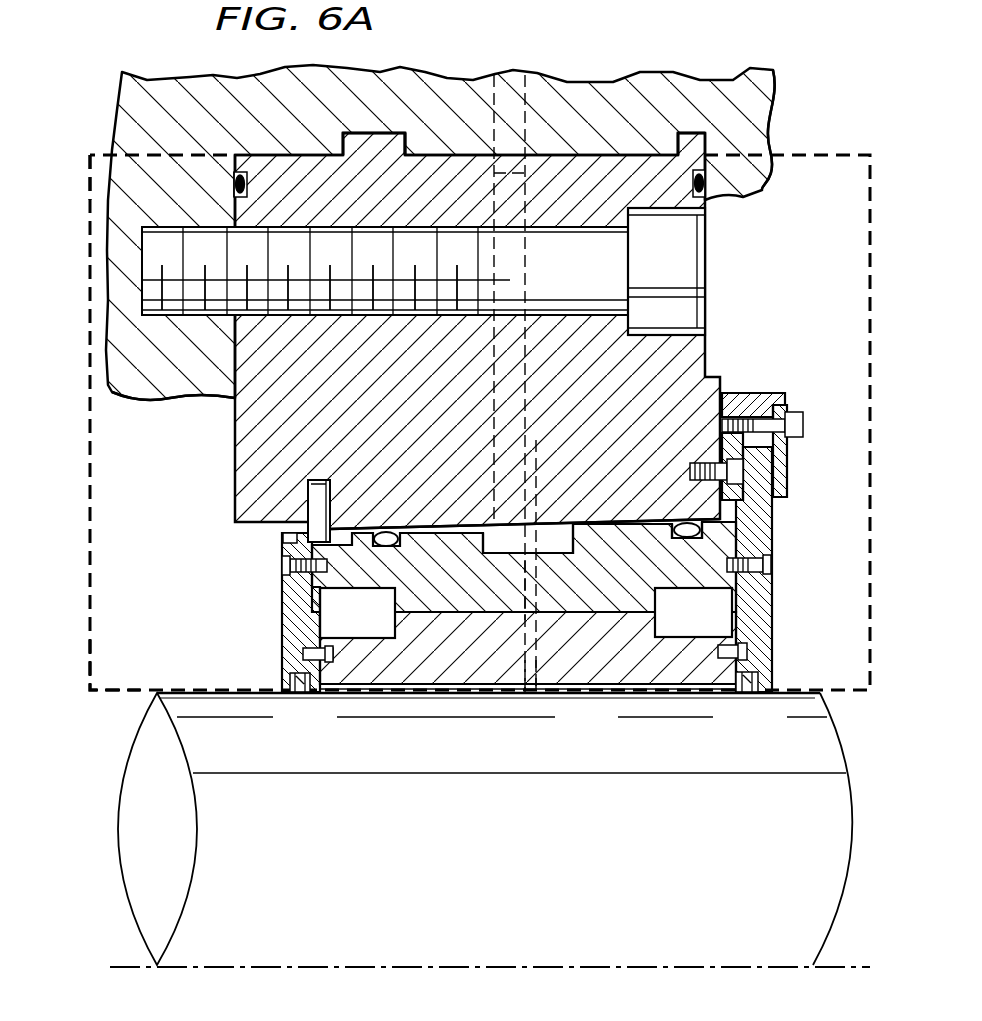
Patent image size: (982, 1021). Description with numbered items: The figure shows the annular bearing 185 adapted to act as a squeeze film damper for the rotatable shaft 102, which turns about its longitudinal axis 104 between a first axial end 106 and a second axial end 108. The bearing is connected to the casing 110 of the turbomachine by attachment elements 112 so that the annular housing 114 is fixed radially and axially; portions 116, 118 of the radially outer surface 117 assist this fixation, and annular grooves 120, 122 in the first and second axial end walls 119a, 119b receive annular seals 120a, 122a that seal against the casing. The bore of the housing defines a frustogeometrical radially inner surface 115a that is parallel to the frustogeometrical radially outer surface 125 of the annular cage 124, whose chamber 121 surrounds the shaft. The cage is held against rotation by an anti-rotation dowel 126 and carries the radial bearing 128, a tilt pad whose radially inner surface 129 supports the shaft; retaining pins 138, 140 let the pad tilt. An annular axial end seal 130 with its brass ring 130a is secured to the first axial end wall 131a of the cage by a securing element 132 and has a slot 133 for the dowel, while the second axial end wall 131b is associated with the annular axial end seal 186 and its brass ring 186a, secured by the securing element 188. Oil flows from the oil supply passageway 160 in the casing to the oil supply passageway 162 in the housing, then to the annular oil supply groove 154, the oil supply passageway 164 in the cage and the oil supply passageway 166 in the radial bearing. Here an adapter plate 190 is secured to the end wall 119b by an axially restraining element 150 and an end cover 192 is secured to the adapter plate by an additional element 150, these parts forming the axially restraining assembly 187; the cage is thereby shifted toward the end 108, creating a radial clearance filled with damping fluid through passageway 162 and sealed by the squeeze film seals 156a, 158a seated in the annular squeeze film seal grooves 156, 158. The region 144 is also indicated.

The rotatable shaft 102 is at (553, 850).
The longitudinal axis 104 is at (225, 970).
The first axial end 106 is at (90, 152).
The second axial end 108 is at (870, 152).
The casing 110 is at (184, 127).
The attachment elements 112 is at (686, 303).
The annular housing 114 is at (390, 402).
The frustogeometrical radially inner surface 115a is at (492, 525).
The portion of radially outer surface 116 is at (382, 150).
The radially outer surface 117 is at (318, 190).
The portion of radially outer surface 118 is at (685, 143).
The first axial end wall 119a is at (230, 398).
The second axial end wall 119b is at (766, 126).
The annular groove 120 is at (250, 186).
The annular seal 120a is at (233, 186).
The chamber 121 is at (635, 692).
The annular groove 122 is at (693, 185).
The annular seal 122a is at (708, 194).
The annular cage 124 is at (510, 603).
The frustogeometrical radially outer surface 125 is at (430, 548).
The anti-rotation dowel 126 is at (312, 503).
The radial bearing 128 is at (494, 662).
The radially inner surface 129 is at (585, 694).
The annular axial end seal 130 is at (283, 619).
The annular brass ring 130a is at (298, 693).
The first axial end wall 131a is at (300, 580).
The second axial end wall 131b is at (693, 612).
The securing element 132 is at (282, 566).
The slot 133 is at (282, 537).
The retaining pin 138 is at (303, 654).
The retaining pin 140 is at (717, 652).
The shaft portion 144 is at (450, 1016).
The axially restraining element 150 is at (722, 466).
The annular oil supply groove 154 is at (493, 550).
The annular squeeze film seal groove 156 is at (427, 537).
The squeeze film seal 156a is at (385, 533).
The annular squeeze film seal groove 158 is at (673, 531).
The squeeze film seal 158a is at (688, 522).
The oil supply passageway 160 is at (494, 74).
The oil supply passageway 162 is at (520, 213).
The oil supply passageway 164 is at (566, 590).
The oil supply passageway 166 is at (530, 692).
The annular bearing 185 is at (70, 670).
The annular axial end seal 186 is at (770, 633).
The annular brass ring 186a is at (750, 693).
The axially restraining assembly 187 is at (802, 347).
The securing element 188 is at (768, 564).
The adapter plate 190 is at (746, 393).
The end cover 192 is at (787, 478).